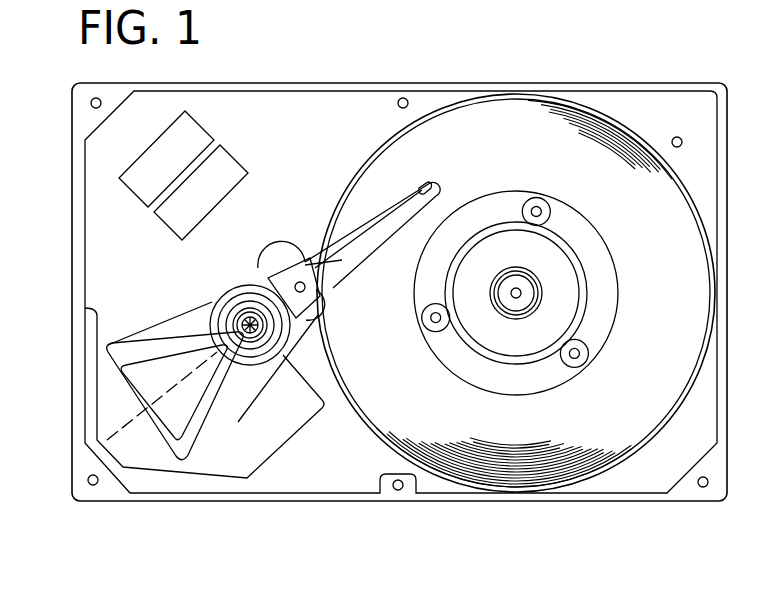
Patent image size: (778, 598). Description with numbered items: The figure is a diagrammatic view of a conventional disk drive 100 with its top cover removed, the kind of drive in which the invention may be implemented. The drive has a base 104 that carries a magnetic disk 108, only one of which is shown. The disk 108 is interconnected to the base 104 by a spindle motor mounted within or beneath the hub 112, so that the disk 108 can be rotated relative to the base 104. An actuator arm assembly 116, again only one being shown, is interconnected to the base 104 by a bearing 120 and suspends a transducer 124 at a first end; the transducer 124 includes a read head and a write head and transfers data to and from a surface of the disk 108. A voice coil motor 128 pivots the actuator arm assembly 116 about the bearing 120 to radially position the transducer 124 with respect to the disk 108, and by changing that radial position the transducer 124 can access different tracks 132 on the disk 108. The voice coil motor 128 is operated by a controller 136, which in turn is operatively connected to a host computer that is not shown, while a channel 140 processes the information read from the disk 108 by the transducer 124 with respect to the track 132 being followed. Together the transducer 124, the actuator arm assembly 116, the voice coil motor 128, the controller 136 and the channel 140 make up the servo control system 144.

The disk drive 100 is at (607, 75).
The base 104 is at (343, 472).
The magnetic disk 108 is at (530, 460).
The hub 112 is at (523, 288).
The actuator arm assembly 116 is at (385, 210).
The bearing 120 is at (242, 320).
The transducer 124 is at (425, 180).
The voice coil motor 128 is at (110, 370).
The tracks 132 is at (502, 478).
The controller 136 is at (138, 188).
The channel 140 is at (170, 217).
The servo control system 144 is at (293, 220).